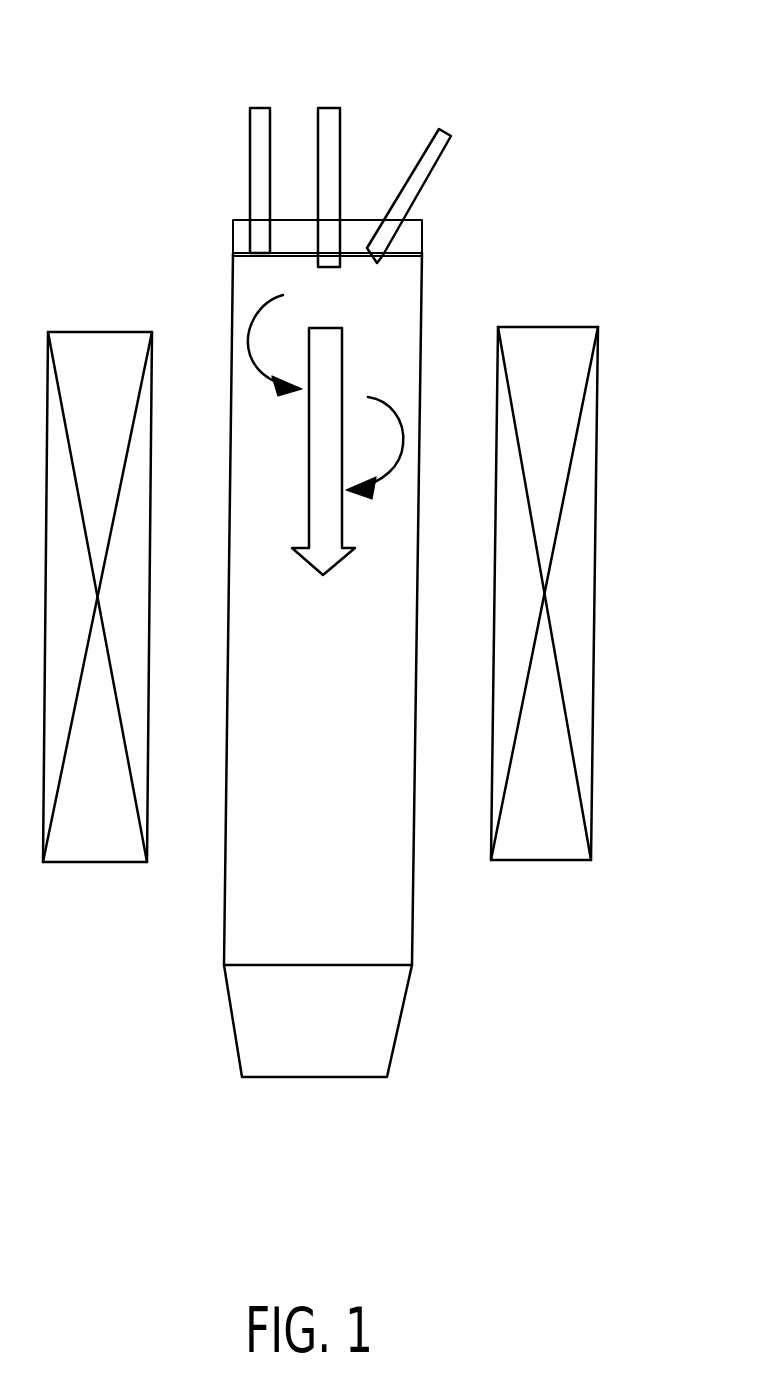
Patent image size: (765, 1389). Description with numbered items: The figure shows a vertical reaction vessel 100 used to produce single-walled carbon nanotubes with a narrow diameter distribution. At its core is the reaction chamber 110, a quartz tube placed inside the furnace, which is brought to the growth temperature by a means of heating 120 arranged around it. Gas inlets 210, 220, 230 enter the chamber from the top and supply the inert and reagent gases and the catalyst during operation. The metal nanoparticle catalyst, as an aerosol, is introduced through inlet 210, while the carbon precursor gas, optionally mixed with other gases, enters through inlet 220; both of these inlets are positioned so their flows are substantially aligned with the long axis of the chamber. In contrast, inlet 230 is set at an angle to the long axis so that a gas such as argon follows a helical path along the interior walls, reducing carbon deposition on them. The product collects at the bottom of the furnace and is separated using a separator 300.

The vertical reaction vessel 100 is at (341, 1200).
The reaction chamber 110 is at (322, 782).
The means of heating 120 is at (550, 361).
The gas inlet 210 is at (265, 108).
The gas inlet 220 is at (335, 108).
The gas inlet 230 is at (450, 133).
The separator 300 is at (363, 1022).